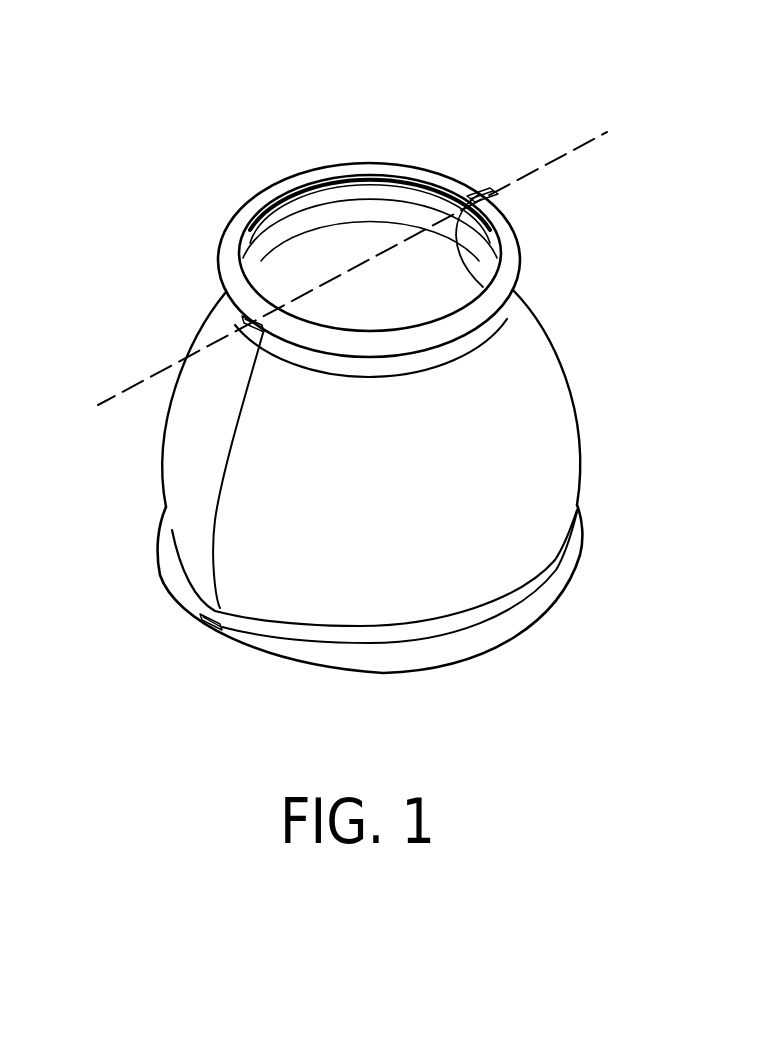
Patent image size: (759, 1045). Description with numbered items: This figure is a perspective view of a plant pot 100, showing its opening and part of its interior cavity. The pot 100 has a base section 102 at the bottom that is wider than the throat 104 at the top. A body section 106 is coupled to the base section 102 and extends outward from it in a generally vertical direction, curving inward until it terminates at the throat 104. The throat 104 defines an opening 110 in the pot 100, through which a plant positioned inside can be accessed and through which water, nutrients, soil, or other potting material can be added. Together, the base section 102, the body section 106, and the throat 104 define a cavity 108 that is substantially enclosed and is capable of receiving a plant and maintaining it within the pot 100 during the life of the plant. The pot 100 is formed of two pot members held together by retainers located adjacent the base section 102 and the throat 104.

The pot 100 is at (389, 122).
The base section 102 is at (565, 566).
The throat 104 is at (512, 264).
The body section 106 is at (553, 421).
The cavity 108 is at (318, 269).
The opening 110 is at (404, 207).